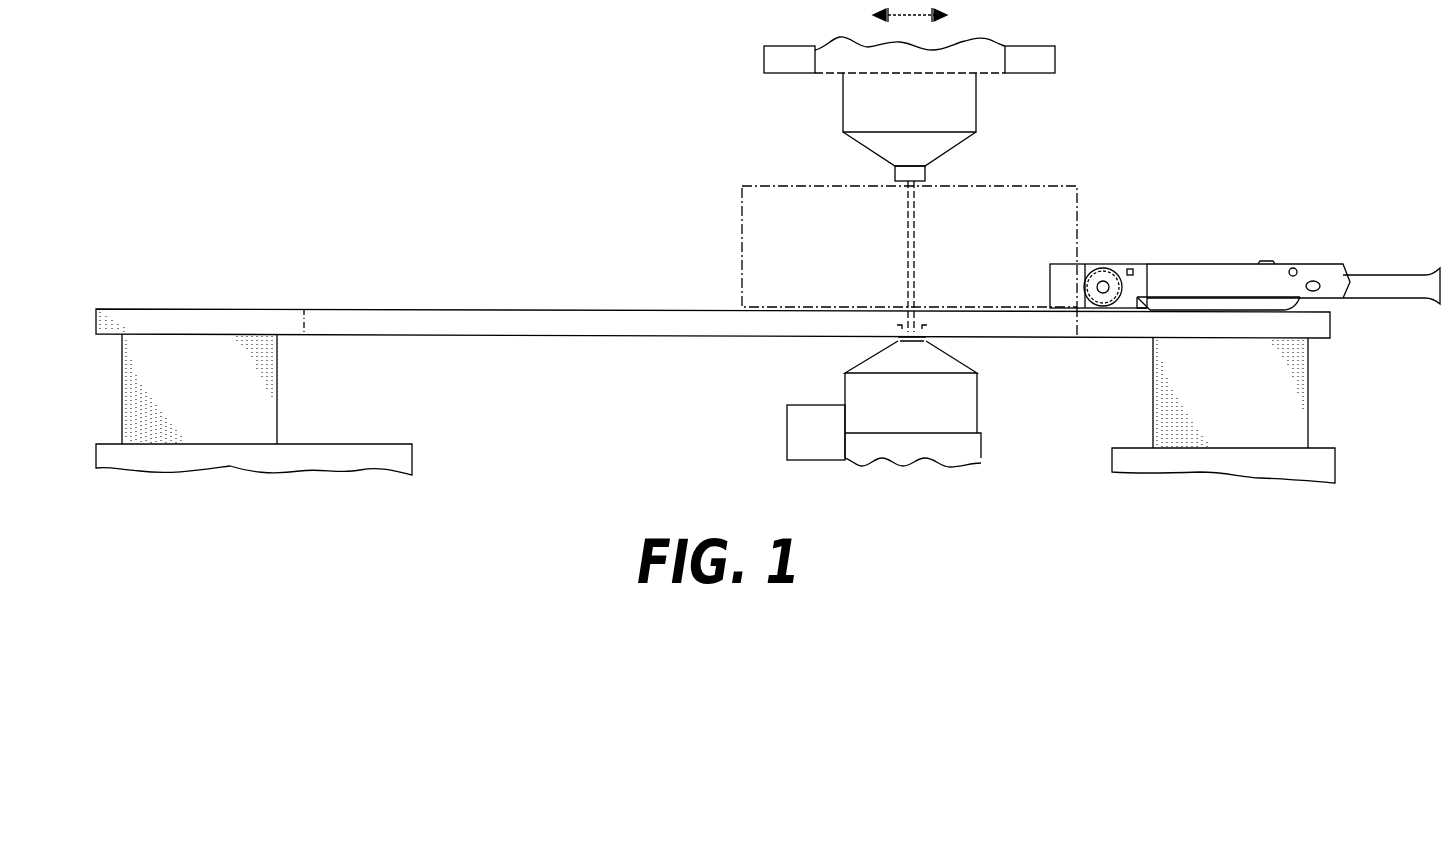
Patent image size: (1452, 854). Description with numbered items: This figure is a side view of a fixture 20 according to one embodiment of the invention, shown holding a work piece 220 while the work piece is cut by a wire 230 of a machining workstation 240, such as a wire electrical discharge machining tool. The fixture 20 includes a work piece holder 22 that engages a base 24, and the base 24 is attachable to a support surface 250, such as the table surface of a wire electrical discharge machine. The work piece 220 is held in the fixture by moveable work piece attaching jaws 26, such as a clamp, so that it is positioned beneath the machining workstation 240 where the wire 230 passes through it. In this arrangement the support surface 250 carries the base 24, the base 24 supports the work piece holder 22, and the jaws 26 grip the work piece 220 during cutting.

The fixture 20 is at (1200, 245).
The work piece holder 22 is at (1323, 272).
The base 24 is at (1222, 308).
The work piece attaching jaws 26 is at (1050, 284).
The work piece 220 is at (742, 246).
The wire 230 is at (907, 236).
The machining workstation 240 is at (728, 72).
The support surface 250 is at (500, 310).